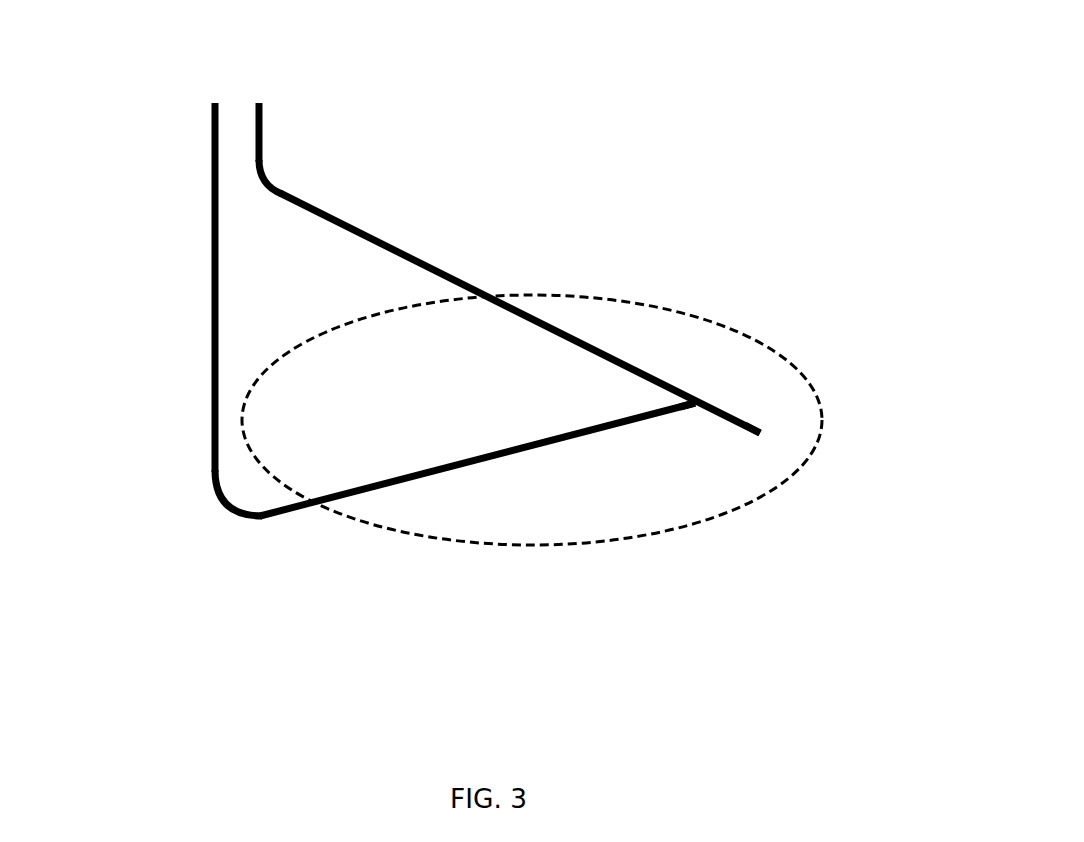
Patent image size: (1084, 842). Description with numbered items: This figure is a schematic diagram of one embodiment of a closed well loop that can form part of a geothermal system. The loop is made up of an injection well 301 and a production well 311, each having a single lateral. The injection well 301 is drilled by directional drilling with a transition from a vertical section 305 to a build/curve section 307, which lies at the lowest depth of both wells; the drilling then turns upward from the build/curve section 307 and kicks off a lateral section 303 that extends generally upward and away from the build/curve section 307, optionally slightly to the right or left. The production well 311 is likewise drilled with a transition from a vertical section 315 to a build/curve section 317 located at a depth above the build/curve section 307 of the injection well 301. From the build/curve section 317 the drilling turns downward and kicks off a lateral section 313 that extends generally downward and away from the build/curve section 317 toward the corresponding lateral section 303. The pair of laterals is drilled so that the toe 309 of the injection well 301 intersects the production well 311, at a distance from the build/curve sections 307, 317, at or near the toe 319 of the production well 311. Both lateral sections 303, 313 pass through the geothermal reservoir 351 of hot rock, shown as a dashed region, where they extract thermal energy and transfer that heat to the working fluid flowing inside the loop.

The injection well 301 is at (470, 376).
The lateral section of injection well 303 is at (415, 478).
The vertical section of injection well 305 is at (215, 350).
The build/curve section of injection well 307 is at (222, 497).
The toe of injection well 309 is at (658, 413).
The production well 311 is at (598, 224).
The lateral section of production well 313 is at (545, 327).
The vertical section of production well 315 is at (340, 72).
The build/curve section of production well 317 is at (263, 178).
The toe of production well 319 is at (841, 343).
The geothermal reservoir (hot rock) 351 is at (660, 532).